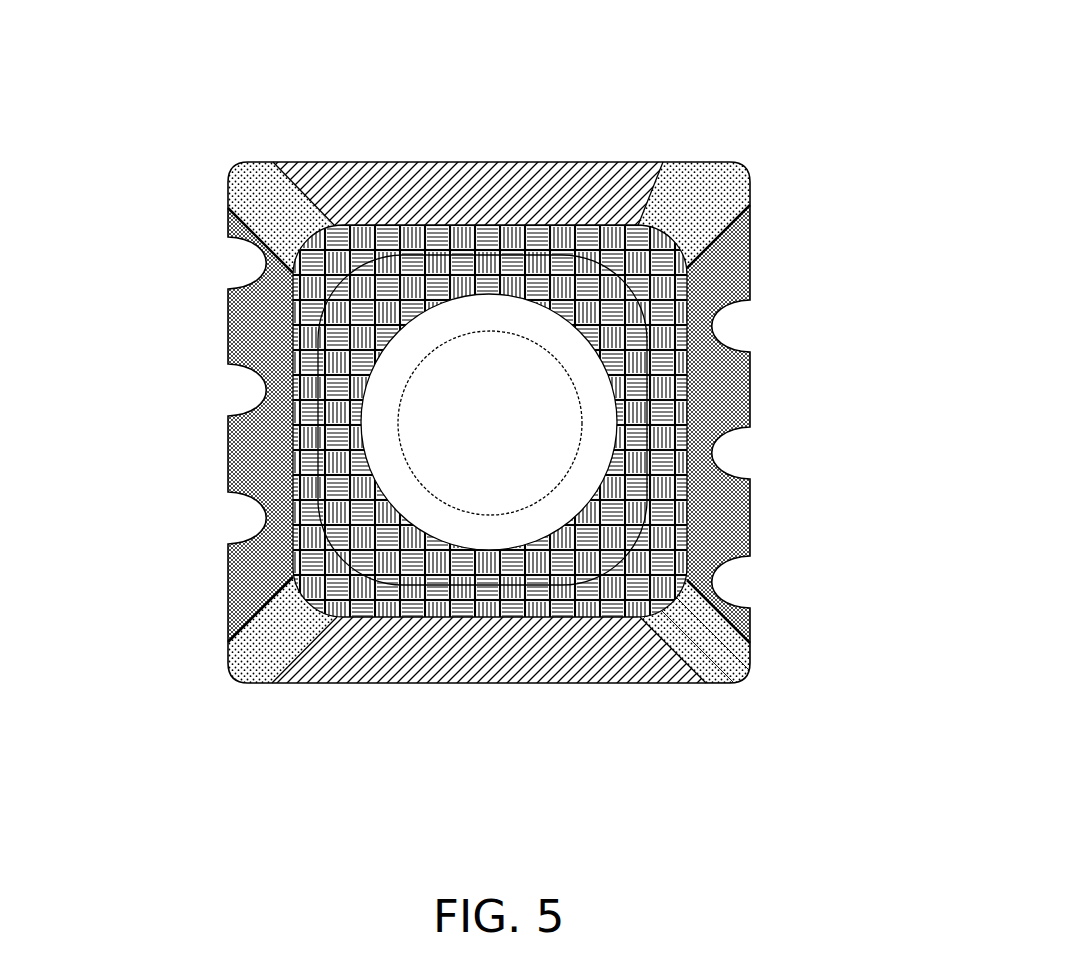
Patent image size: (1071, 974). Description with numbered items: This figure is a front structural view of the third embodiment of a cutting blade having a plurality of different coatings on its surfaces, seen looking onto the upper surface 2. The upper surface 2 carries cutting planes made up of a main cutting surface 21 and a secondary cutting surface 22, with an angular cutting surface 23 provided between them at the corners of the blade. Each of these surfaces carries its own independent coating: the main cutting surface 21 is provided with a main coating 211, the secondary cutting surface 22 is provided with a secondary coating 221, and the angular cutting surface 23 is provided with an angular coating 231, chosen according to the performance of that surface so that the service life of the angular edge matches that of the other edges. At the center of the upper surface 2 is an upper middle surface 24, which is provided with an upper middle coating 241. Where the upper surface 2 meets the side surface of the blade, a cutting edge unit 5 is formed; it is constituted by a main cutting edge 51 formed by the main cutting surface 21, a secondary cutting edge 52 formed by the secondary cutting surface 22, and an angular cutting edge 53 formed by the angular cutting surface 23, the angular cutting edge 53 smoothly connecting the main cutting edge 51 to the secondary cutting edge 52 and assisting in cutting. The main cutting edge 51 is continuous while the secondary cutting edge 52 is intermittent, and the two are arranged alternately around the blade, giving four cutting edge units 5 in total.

The upper surface 2 is at (579, 326).
The main cutting surface 21 is at (470, 192).
The main coating 211 is at (603, 660).
The secondary cutting surface 22 is at (238, 458).
The secondary coating 221 is at (717, 390).
The angular cutting surface 23 is at (268, 655).
The angular coating 231 is at (255, 195).
The upper middle surface 24 is at (443, 640).
The upper middle coating 241 is at (612, 300).
The cutting edge unit 5 is at (800, 701).
The main cutting edge 51 is at (675, 684).
The secondary cutting edge 52 is at (752, 623).
The angular cutting edge 53 is at (738, 667).